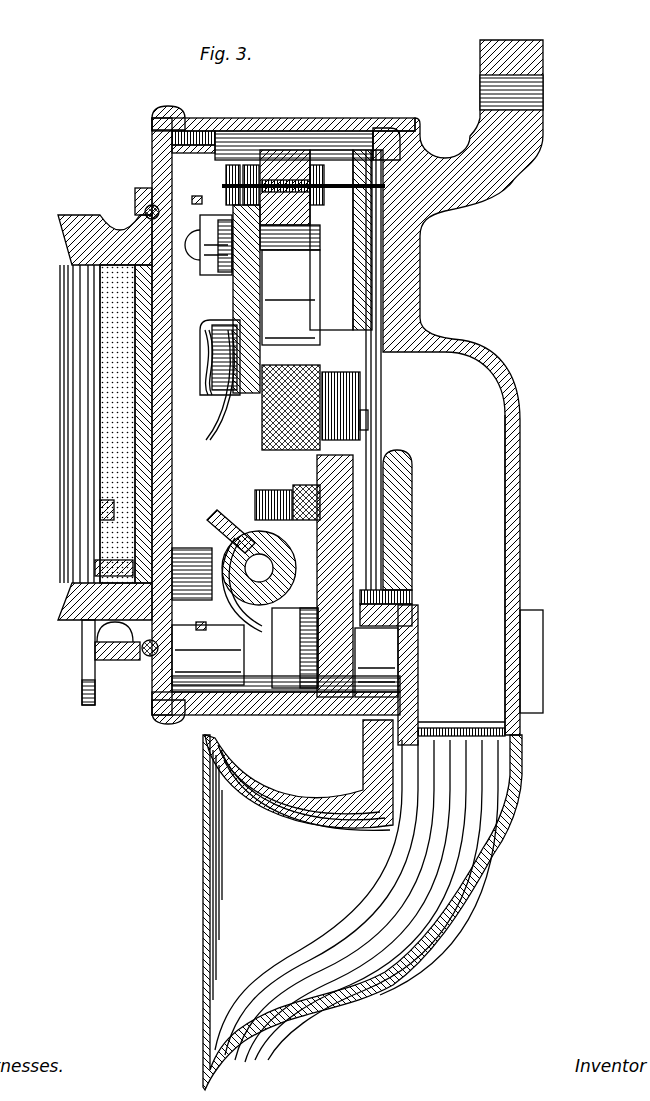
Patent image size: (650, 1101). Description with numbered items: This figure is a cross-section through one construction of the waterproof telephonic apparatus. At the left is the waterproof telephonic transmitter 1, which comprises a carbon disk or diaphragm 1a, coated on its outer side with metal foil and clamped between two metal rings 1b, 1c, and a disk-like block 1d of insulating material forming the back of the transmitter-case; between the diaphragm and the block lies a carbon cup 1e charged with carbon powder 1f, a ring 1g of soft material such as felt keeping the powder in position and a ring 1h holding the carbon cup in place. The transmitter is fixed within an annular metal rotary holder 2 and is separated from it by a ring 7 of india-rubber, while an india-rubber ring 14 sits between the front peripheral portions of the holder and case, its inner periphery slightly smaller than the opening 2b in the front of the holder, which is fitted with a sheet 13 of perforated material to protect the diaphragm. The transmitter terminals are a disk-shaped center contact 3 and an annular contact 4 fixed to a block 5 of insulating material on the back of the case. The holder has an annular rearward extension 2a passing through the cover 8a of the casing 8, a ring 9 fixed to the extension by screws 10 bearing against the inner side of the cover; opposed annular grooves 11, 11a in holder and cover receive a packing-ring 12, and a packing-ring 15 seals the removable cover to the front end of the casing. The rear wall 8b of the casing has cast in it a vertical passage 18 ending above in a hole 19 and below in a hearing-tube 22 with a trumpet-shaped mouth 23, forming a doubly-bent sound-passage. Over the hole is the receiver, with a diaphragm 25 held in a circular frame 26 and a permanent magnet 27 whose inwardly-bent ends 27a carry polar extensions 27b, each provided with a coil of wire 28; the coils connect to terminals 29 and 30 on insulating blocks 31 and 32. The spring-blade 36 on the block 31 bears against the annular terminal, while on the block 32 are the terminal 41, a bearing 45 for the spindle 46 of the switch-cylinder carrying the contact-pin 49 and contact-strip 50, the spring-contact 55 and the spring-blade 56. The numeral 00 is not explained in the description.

The waterproof telephonic transmitter 1 is at (94, 350).
The carbon disk or diaphragm 1a is at (105, 395).
The metal ring 1b is at (73, 290).
The metal ring 1c is at (146, 208).
The disk-like block of insulating material 1d is at (95, 565).
The carbon cup 1e is at (135, 470).
The carbon powder 1f is at (100, 430).
The ring of soft material 1g is at (100, 510).
The ring 1h is at (80, 300).
The annular metal rotary holder 2 is at (95, 216).
The annular rearward extension 2a is at (195, 405).
The opening 2b is at (112, 455).
The center metal contact 3 is at (205, 374).
The annular metal contact 4 is at (200, 345).
The block of insulating material 5 is at (233, 300).
The insulating ring 7 is at (118, 236).
The casing 8 is at (268, 124).
The cover 8a is at (175, 140).
The rear wall 8b is at (421, 262).
The ring 9 is at (200, 268).
The screws 10 is at (200, 242).
The annular groove 11 is at (130, 634).
The annular groove 11a is at (208, 653).
The packing-ring 12 is at (135, 652).
The sheet of perforated material 13 is at (88, 325).
The india-rubber ring 14 is at (62, 262).
The packing-ring 15 is at (163, 108).
The vertical passage 18 is at (494, 575).
The hole 19 is at (378, 400).
The hearing-tube 22 is at (356, 901).
The trumpet-shaped mouth 23 is at (235, 875).
The receiver diaphragm 25 is at (385, 382).
The circular frame 26 is at (352, 258).
The permanent magnet 27 is at (290, 326).
The inwardly-bent ends 27a is at (291, 407).
The polar extension 27b is at (370, 419).
The coil of wire 28 is at (340, 386).
The terminal 29 is at (225, 220).
The terminal 30 is at (208, 426).
The block of insulating material 31 is at (262, 282).
The block of insulating material 32 is at (364, 573).
The spring-blade 36 is at (311, 342).
The terminal 41 is at (300, 670).
The bearing 45 is at (259, 568).
The spindle 46 is at (242, 590).
The contact-pin 49 is at (238, 518).
The contact-strip 50 is at (290, 648).
The spring-contact 55 is at (273, 503).
The spring-blade 56 is at (320, 588).
The pipe 00 is at (83, 663).